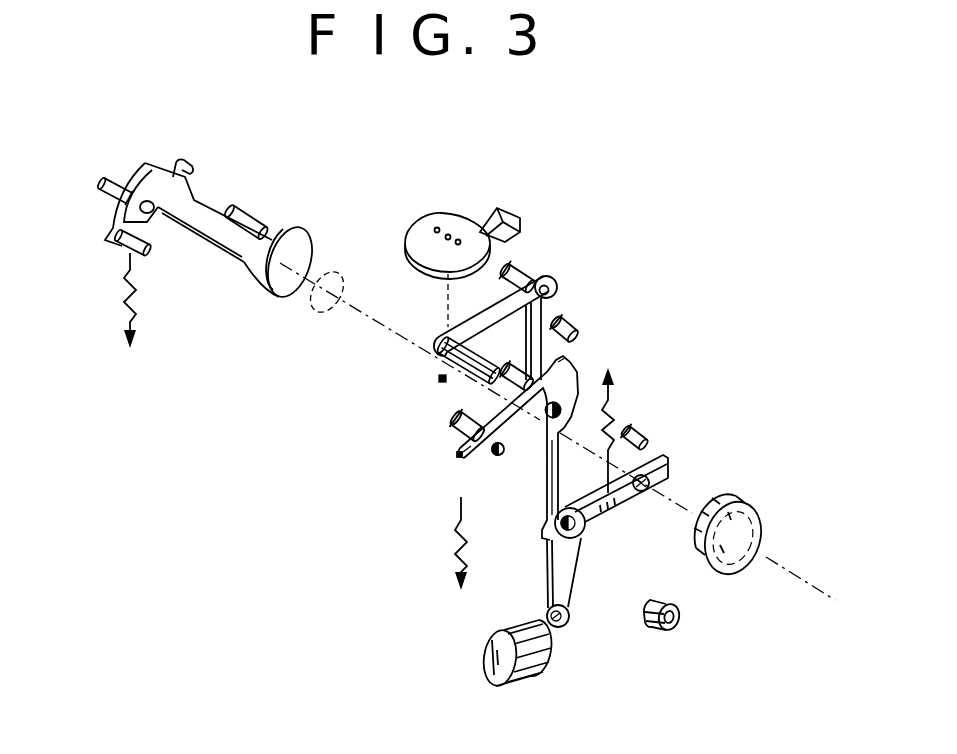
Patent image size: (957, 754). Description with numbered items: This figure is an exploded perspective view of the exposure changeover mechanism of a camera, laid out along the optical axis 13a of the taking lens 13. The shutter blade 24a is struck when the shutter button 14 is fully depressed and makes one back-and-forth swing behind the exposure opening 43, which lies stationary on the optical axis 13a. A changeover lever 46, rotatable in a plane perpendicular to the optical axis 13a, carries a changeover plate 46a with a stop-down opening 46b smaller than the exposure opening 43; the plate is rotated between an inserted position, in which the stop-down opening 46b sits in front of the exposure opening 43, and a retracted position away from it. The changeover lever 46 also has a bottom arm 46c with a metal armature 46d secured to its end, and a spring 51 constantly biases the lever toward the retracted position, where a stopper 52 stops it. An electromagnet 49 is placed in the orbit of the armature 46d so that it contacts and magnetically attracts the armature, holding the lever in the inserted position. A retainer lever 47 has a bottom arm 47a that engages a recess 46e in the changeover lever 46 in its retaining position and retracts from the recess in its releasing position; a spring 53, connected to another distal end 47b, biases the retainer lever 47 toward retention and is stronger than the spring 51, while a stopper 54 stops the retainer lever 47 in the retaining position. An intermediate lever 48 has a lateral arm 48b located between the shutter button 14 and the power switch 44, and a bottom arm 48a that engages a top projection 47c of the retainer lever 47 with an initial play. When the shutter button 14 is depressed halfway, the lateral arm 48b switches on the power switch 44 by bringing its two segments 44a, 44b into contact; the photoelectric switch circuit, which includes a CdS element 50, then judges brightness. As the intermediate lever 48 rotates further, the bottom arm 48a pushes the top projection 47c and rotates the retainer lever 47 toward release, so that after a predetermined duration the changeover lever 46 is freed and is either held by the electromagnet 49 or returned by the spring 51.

The taking lens 13 is at (762, 522).
The optical axis 13a is at (796, 582).
The shutter button 14 is at (428, 218).
The shutter blade 24a is at (199, 228).
The exposure opening 43 is at (335, 273).
The power switch 44 is at (397, 387).
The segment 44a is at (441, 368).
The segment 44b is at (443, 395).
The changeover lever 46 is at (626, 548).
The changeover plate 46a is at (671, 469).
The stop-down opening 46b is at (650, 481).
The bottom arm 46c is at (613, 595).
The armature 46d is at (567, 627).
The recess 46e is at (585, 525).
The retainer lever 47 is at (524, 423).
The bottom arm 47a is at (546, 460).
The distal end 47b is at (460, 458).
The top projection 47c is at (569, 354).
The intermediate lever 48 is at (525, 277).
The bottom arm 48a is at (577, 342).
The lateral arm 48b is at (436, 338).
The electromagnet 49 is at (476, 645).
The CdS element 50 is at (672, 626).
The spring 51 is at (611, 403).
The stopper 52 is at (644, 433).
The spring 53 is at (457, 521).
The stopper 54 is at (568, 322).